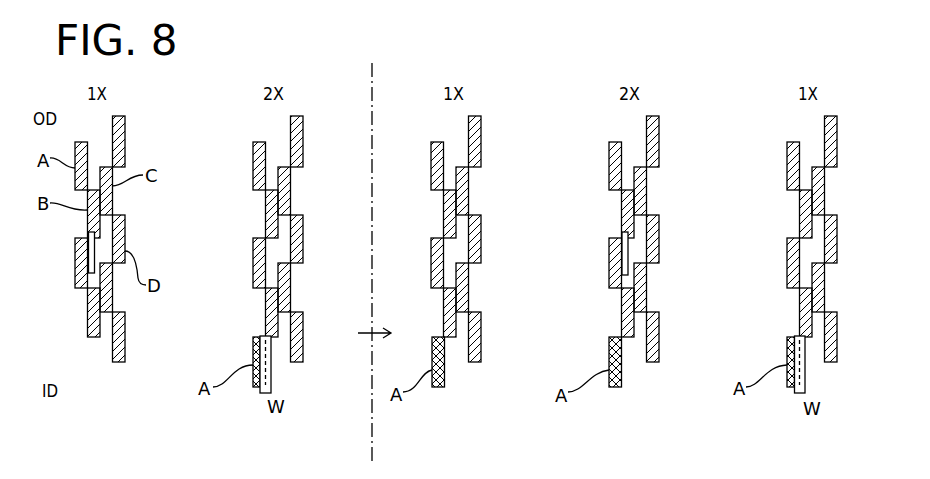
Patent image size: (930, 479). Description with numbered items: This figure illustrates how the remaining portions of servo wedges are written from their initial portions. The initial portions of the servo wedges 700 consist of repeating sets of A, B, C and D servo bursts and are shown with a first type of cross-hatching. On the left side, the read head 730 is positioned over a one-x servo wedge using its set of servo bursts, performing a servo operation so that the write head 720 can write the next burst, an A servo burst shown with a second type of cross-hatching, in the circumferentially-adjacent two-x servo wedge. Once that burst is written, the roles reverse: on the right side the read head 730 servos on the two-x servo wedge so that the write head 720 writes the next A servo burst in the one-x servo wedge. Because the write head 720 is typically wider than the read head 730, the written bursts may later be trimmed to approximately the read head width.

The servo wedges 700 is at (149, 117).
The write head 720 is at (263, 393).
The read head 730 is at (75, 252).